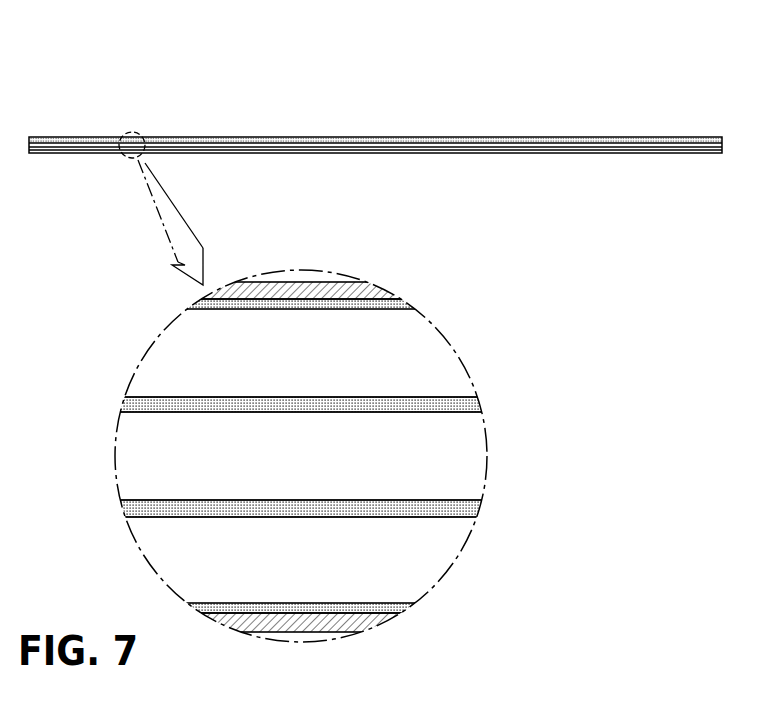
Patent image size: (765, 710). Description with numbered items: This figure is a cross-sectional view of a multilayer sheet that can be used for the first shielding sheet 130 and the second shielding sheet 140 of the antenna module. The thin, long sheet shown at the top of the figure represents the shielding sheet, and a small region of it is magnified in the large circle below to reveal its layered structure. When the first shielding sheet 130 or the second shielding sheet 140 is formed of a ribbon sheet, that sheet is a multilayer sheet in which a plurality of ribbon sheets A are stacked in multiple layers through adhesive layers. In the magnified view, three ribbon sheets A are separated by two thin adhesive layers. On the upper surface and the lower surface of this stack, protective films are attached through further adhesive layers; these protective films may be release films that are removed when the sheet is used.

The first shielding sheet 130 is at (375, 100).
The second shielding sheet 140 is at (170, 70).
The ribbon sheet A is at (461, 356).